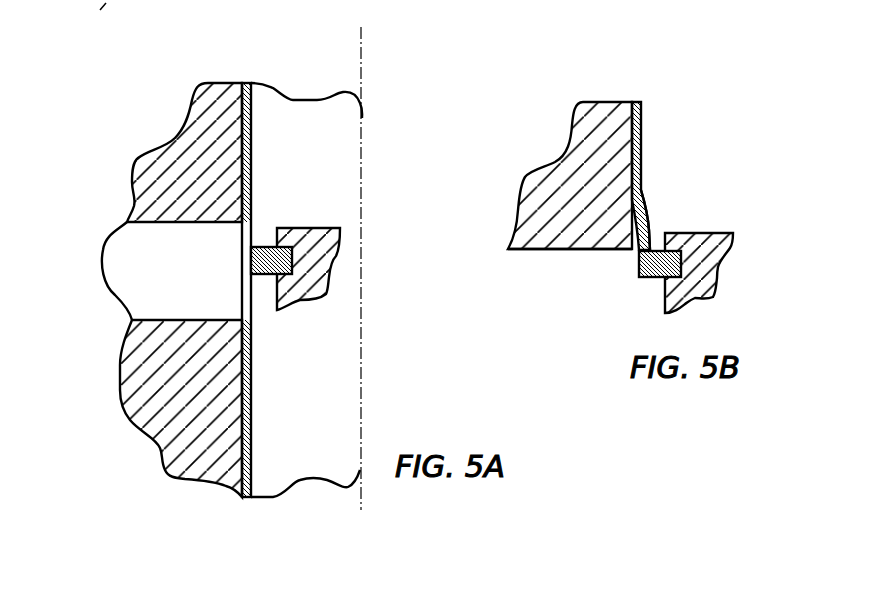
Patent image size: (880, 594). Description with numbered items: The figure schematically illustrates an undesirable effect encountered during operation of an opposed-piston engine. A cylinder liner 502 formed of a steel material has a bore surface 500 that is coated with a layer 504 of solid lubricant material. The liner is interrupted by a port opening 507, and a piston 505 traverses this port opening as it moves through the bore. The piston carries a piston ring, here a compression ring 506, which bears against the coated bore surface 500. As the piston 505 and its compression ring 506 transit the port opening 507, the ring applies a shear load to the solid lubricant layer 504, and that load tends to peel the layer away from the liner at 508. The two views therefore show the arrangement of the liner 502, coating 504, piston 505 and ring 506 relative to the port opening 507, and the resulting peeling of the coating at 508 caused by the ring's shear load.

In FIG. 5A, the bore surface 500 is at (247, 83).
In FIG. 5A, the cylinder liner 502 is at (162, 100).
In FIG. 5B, the cylinder liner 502 is at (573, 113).
In FIG. 5A, the layer of solid lubricant material 504 is at (252, 102).
In FIG. 5B, the layer of solid lubricant material 504 is at (642, 118).
In FIG. 5A, the piston 505 is at (330, 229).
In FIG. 5B, the piston 505 is at (734, 250).
In FIG. 5A, the compression ring 506 is at (263, 247).
In FIG. 5B, the compression ring 506 is at (657, 236).
In FIG. 5A, the port opening 507 is at (111, 239).
In FIG. 5B, the port opening 507 is at (550, 281).
In FIG. 5B, the peeling location 508 is at (649, 212).